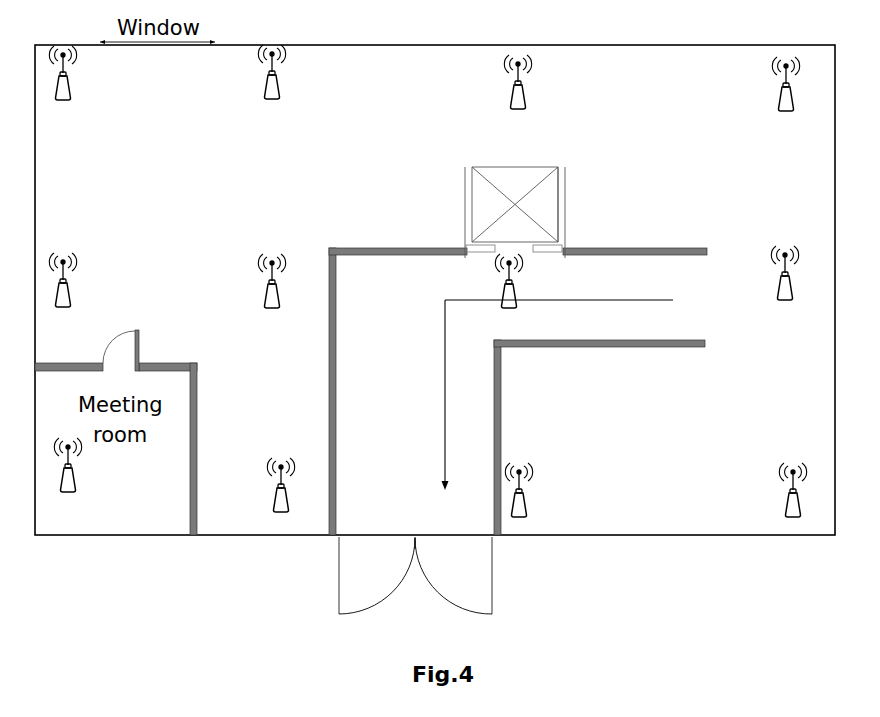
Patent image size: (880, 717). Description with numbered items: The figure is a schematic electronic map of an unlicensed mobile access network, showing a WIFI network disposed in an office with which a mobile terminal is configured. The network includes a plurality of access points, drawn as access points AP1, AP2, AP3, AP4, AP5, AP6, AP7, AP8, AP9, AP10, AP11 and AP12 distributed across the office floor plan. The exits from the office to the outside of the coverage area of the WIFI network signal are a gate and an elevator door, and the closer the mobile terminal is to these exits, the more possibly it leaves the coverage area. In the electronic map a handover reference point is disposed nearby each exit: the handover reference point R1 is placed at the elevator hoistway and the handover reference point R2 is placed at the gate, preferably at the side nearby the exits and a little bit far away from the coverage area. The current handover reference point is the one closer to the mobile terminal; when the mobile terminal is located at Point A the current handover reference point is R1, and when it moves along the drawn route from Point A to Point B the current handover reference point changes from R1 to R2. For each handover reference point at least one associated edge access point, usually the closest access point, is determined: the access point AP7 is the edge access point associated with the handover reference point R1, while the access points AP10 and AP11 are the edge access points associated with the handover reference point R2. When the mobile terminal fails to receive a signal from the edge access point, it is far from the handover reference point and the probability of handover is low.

The access point AP1 is at (63, 87).
The access point AP2 is at (272, 86).
The access point AP3 is at (520, 94).
The access point AP4 is at (780, 96).
The access point AP5 is at (63, 293).
The access point AP6 is at (272, 294).
The access point AP7 is at (508, 293).
The access point AP8 is at (782, 286).
The access point AP9 is at (65, 478).
The access point AP10 is at (250, 485).
The access point AP11 is at (546, 490).
The access point AP12 is at (765, 490).
The handover reference point R1 is at (515, 194).
The handover reference point R2 is at (415, 559).
The Point A is at (576, 310).
The Point B is at (457, 398).